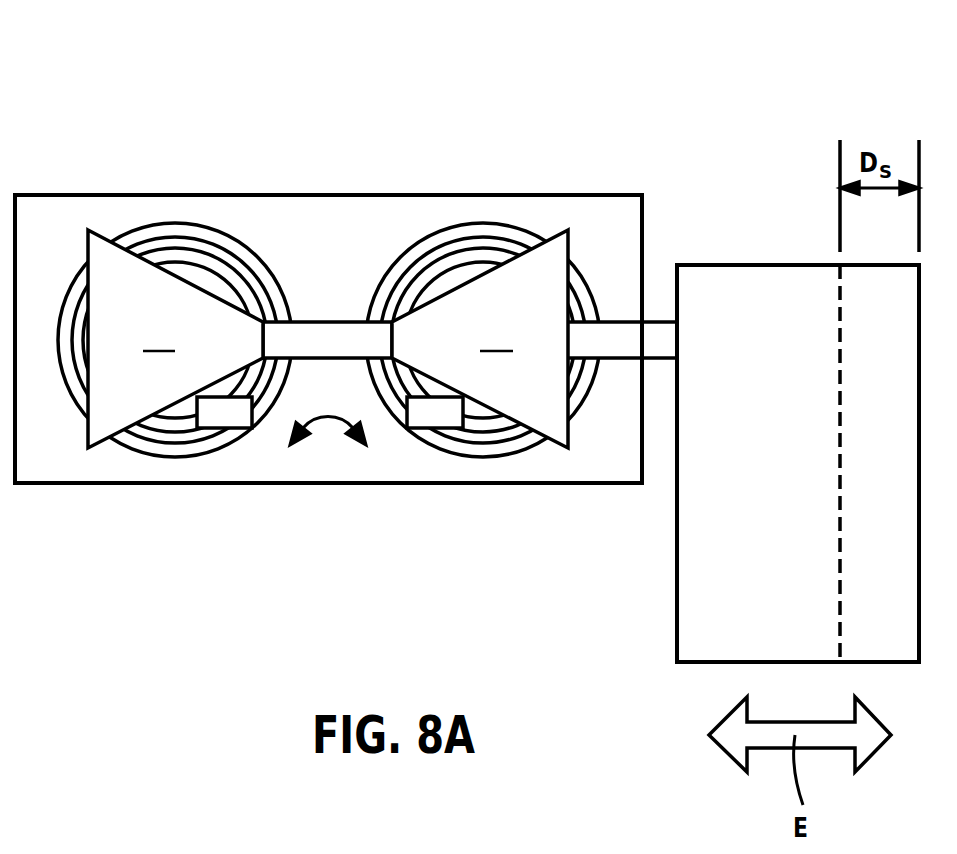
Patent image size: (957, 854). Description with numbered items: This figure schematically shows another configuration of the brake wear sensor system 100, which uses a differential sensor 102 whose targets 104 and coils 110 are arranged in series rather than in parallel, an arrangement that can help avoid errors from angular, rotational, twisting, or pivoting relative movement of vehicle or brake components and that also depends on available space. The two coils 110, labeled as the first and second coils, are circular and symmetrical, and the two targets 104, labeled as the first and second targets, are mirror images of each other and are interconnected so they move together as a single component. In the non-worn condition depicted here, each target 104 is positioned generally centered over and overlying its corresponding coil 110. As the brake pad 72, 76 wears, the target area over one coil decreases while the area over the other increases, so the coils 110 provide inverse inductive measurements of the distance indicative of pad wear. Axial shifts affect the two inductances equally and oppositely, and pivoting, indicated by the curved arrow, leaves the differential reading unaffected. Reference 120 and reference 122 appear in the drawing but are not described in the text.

The sensor system 100 is at (506, 81).
The sensor 102 is at (346, 295).
The targets 104 is at (158, 300).
The coils 110 is at (165, 232).
The shaft 120 is at (335, 257).
The brake pad 72 is at (697, 502).
The brake pad 76 is at (743, 463).
The housing 122 is at (700, 560).